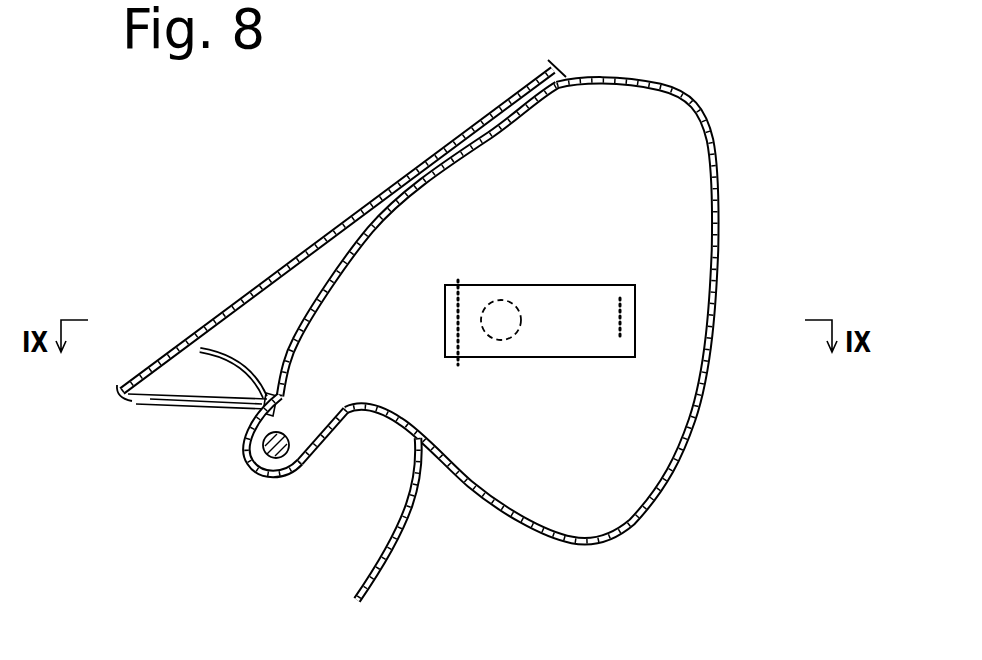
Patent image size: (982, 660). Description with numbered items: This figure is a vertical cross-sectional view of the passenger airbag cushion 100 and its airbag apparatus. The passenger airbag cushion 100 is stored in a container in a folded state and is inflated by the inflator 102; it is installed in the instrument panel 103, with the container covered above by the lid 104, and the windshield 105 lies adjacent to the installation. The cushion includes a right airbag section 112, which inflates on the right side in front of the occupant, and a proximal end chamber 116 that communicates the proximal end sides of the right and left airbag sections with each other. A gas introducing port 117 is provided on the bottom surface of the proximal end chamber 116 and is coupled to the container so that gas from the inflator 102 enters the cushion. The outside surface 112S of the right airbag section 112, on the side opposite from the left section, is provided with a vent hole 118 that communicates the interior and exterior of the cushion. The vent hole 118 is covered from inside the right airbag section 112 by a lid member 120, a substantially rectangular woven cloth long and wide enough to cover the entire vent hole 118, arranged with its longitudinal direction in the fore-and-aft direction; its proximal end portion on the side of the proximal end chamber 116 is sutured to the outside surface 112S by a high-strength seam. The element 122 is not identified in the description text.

The passenger airbag cushion 100 is at (533, 281).
The inflator 102 is at (265, 452).
The instrument panel 103 is at (416, 473).
The lid 104 is at (258, 345).
The windshield 105 is at (247, 296).
The right airbag section 112 is at (718, 172).
The outside surface 112S is at (668, 272).
The proximal end chamber 116 is at (328, 338).
The gas introducing port 117 is at (327, 420).
The vent hole 118 is at (520, 318).
The lid member 120 is at (600, 308).
The gas outlet 122 is at (620, 345).